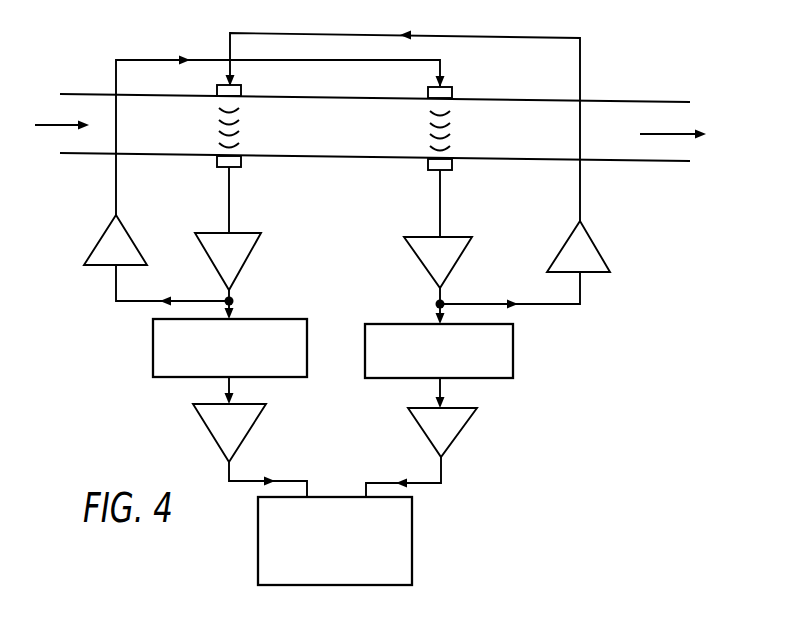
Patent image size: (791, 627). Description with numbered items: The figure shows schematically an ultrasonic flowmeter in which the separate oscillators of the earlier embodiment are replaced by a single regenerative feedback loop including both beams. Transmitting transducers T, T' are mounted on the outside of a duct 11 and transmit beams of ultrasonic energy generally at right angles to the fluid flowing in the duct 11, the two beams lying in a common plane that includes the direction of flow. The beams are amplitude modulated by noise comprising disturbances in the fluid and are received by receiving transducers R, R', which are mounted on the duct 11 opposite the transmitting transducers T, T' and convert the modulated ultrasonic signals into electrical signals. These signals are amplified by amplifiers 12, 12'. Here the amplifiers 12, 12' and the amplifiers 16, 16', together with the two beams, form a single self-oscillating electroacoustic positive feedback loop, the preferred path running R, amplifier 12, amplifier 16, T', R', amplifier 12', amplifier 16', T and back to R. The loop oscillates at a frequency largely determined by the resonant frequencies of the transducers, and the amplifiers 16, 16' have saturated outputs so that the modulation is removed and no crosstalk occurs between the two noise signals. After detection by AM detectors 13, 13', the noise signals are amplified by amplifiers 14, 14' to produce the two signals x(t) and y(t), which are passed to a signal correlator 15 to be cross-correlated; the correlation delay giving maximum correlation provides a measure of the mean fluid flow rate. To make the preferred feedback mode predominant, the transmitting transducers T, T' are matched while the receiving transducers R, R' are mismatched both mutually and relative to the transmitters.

The duct 11 is at (637, 100).
The amplifier 12 is at (240, 236).
The amplifier 12' is at (454, 239).
The AM detector 13 is at (210, 341).
The AM detector 13' is at (466, 343).
The amplifier 14 is at (237, 437).
The amplifier 14' is at (442, 437).
The signal correlator 15 is at (258, 546).
The amplifier 16 is at (156, 260).
The amplifier 16' is at (541, 265).
The transmitting transducer T is at (241, 106).
The receiving transducer R is at (240, 176).
The transmitting transducer T' is at (456, 105).
The receiving transducer R' is at (419, 177).